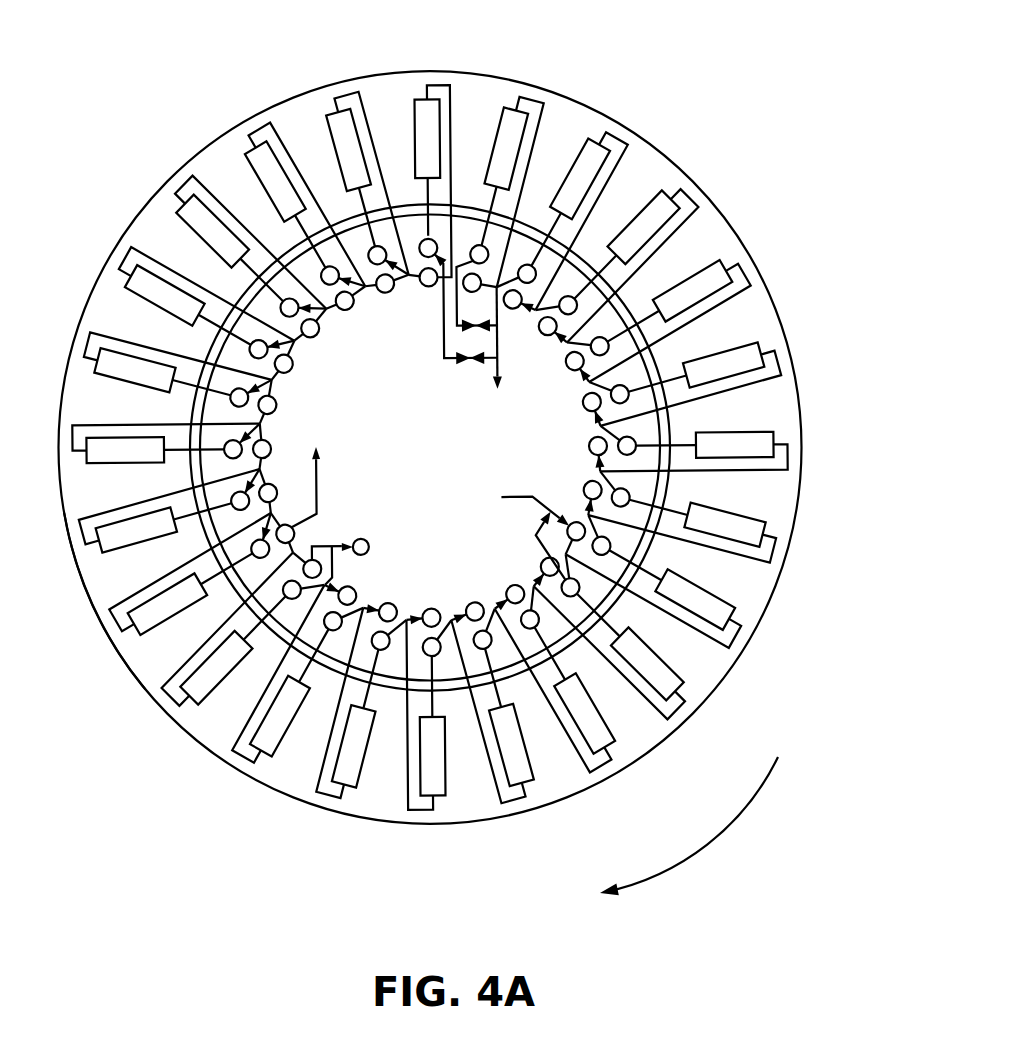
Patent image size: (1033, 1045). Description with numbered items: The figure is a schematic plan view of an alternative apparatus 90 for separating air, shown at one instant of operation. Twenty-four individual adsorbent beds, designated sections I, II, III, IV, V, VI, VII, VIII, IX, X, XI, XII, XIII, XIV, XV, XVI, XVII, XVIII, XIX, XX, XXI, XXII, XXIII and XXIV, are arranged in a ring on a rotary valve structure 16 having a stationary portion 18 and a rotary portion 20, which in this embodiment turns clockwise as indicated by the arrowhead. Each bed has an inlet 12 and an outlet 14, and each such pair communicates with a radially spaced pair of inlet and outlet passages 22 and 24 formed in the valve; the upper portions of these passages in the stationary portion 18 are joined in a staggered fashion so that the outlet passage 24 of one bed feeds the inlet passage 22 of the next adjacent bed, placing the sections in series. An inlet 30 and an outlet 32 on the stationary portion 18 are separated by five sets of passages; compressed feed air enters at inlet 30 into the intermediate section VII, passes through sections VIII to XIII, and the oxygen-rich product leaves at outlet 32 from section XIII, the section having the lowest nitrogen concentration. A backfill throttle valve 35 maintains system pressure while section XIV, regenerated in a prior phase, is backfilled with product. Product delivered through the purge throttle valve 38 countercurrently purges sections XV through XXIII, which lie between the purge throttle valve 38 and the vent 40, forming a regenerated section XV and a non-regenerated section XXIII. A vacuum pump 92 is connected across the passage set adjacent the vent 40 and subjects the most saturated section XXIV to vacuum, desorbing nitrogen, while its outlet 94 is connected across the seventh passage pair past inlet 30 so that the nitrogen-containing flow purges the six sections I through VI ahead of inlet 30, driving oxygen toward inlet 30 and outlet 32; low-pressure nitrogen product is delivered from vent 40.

The inlet 12 is at (741, 558).
The outlet 14 is at (682, 508).
The rotary valve structure 16 is at (226, 761).
The stationary portion 18 is at (232, 586).
The rotary portion 20 is at (91, 606).
The inlet passage 22 is at (588, 449).
The outlet passage 24 is at (508, 598).
The inlet 30 is at (584, 512).
The outlet 32 is at (490, 375).
The backfill throttle valve 35 is at (487, 336).
The purge throttle valve 38 is at (442, 344).
The vent 40 is at (318, 478).
The apparatus 90 is at (433, 455).
The vacuum pump 92 is at (350, 541).
The outlet of vacuum pump 94 is at (368, 545).
The section I is at (254, 760).
The section II is at (340, 797).
The section III is at (445, 810).
The section IV is at (521, 795).
The section V is at (564, 687).
The section VI is at (682, 700).
The section VII is at (738, 627).
The section VIII is at (702, 532).
The section IX is at (692, 463).
The section X is at (773, 356).
The section XI is at (737, 270).
The section XII is at (681, 197).
The section XIII is at (607, 140).
The section XIV is at (495, 226).
The section XV is at (447, 193).
The section XVI is at (338, 104).
The section XVII is at (250, 140).
The section XVIII is at (178, 197).
The section XIX is at (121, 270).
The section XX is at (86, 357).
The section XXI is at (74, 450).
The section XXII is at (86, 542).
The section XXIII is at (121, 627).
The section XXIV is at (286, 606).